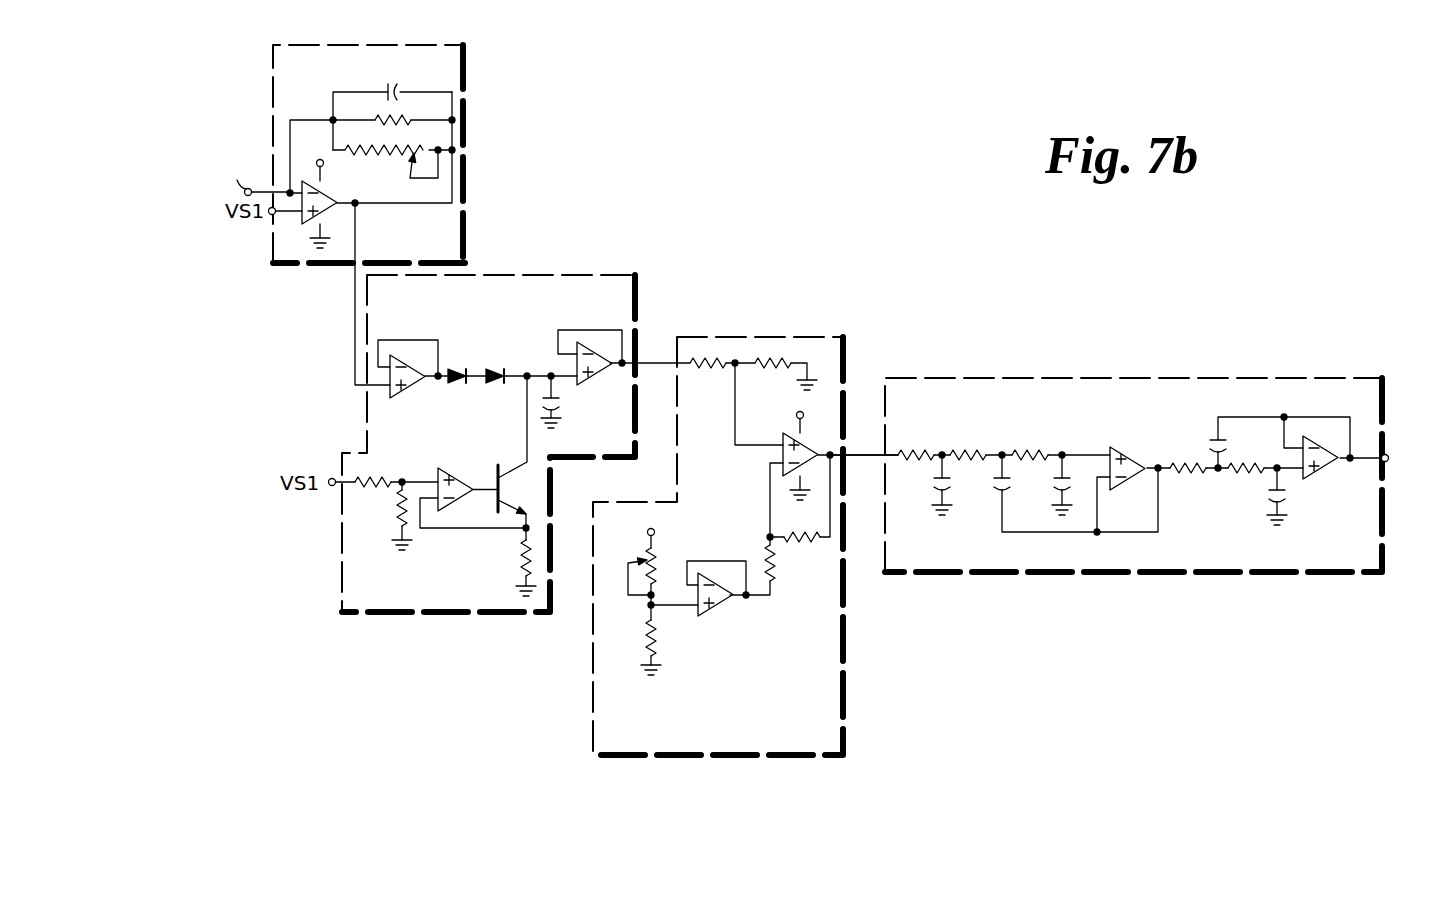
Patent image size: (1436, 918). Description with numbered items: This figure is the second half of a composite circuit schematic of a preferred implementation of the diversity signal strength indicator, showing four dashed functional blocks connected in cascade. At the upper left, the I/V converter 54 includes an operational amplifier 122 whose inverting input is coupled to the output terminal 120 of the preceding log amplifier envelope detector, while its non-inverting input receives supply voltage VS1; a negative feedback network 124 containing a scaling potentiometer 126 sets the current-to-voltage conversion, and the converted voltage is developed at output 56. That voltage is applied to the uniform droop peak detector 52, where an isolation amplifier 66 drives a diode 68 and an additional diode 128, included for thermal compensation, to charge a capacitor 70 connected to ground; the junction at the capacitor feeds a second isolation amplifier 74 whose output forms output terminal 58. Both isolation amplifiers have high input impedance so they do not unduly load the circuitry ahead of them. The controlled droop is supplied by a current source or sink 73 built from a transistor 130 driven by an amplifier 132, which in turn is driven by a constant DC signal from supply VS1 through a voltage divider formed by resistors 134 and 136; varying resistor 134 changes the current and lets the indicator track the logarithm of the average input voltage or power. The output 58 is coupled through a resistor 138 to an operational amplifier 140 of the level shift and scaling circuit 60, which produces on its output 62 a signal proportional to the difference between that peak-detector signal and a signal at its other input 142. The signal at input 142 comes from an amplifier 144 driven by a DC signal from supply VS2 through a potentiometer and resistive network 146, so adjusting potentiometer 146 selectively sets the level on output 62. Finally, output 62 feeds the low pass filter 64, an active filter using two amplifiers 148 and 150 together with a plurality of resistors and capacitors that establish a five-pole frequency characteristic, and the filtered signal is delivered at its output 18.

The I/V converter 54 is at (354, 70).
The output terminal of the log amplifier envelope detector 120 is at (256, 173).
The operational amplifier 122 is at (371, 199).
The negative feedback network 124 is at (338, 106).
The scaling potentiometer 126 is at (401, 169).
The output / input terminal 56 is at (353, 283).
The uniform droop peak detector 52 is at (534, 327).
The isolation amplifier 66 is at (397, 401).
The diode 68 is at (457, 388).
The diode 128 is at (493, 367).
The capacitor 70 is at (562, 408).
The isolation amplifier 74 is at (608, 376).
The output terminal 58 is at (655, 364).
The resistor 134 is at (383, 476).
The resistor 136 is at (398, 508).
The amplifier 132 is at (443, 466).
The transistor 130 is at (497, 470).
The current source or sink 73 is at (462, 546).
The level shift/scaling circuit 60 is at (699, 745).
The resistor 138 is at (707, 372).
The operational amplifier 140 is at (791, 453).
The input 142 is at (763, 470).
The output 62 is at (866, 454).
The amplifier 144 is at (700, 617).
The potentiometer and resistive network 146 is at (630, 562).
The low pass filter 64 is at (1132, 406).
The amplifier 148 is at (1141, 445).
The amplifier 150 is at (1312, 472).
The output 18 is at (1390, 458).